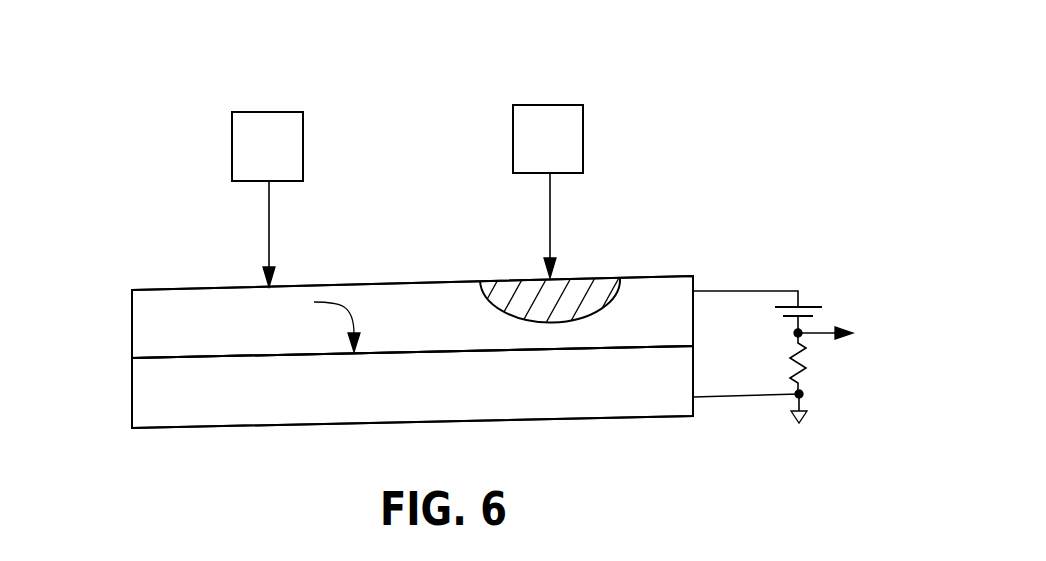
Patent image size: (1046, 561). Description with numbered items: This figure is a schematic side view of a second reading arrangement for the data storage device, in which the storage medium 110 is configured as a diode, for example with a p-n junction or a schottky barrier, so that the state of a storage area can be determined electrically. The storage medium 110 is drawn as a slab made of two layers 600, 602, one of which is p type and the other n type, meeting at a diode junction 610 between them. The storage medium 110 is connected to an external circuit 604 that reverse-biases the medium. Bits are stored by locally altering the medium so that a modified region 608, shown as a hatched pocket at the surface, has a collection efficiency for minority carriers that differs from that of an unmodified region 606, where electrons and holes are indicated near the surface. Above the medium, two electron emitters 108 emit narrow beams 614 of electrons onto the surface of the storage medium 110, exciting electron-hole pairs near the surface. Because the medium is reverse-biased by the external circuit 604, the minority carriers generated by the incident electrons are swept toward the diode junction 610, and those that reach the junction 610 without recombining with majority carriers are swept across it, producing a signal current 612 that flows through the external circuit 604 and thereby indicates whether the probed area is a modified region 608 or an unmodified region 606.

The electron emitter 108 is at (291, 116).
The storage medium 110 is at (560, 439).
The first diode layer 600 is at (130, 325).
The second diode layer 602 is at (130, 395).
The external circuit 604 is at (808, 282).
The unmodified region 606 is at (305, 288).
The modified region 608 is at (605, 278).
The diode junction 610 is at (262, 358).
The signal current 612 is at (847, 333).
The electron beam 614 is at (266, 237).